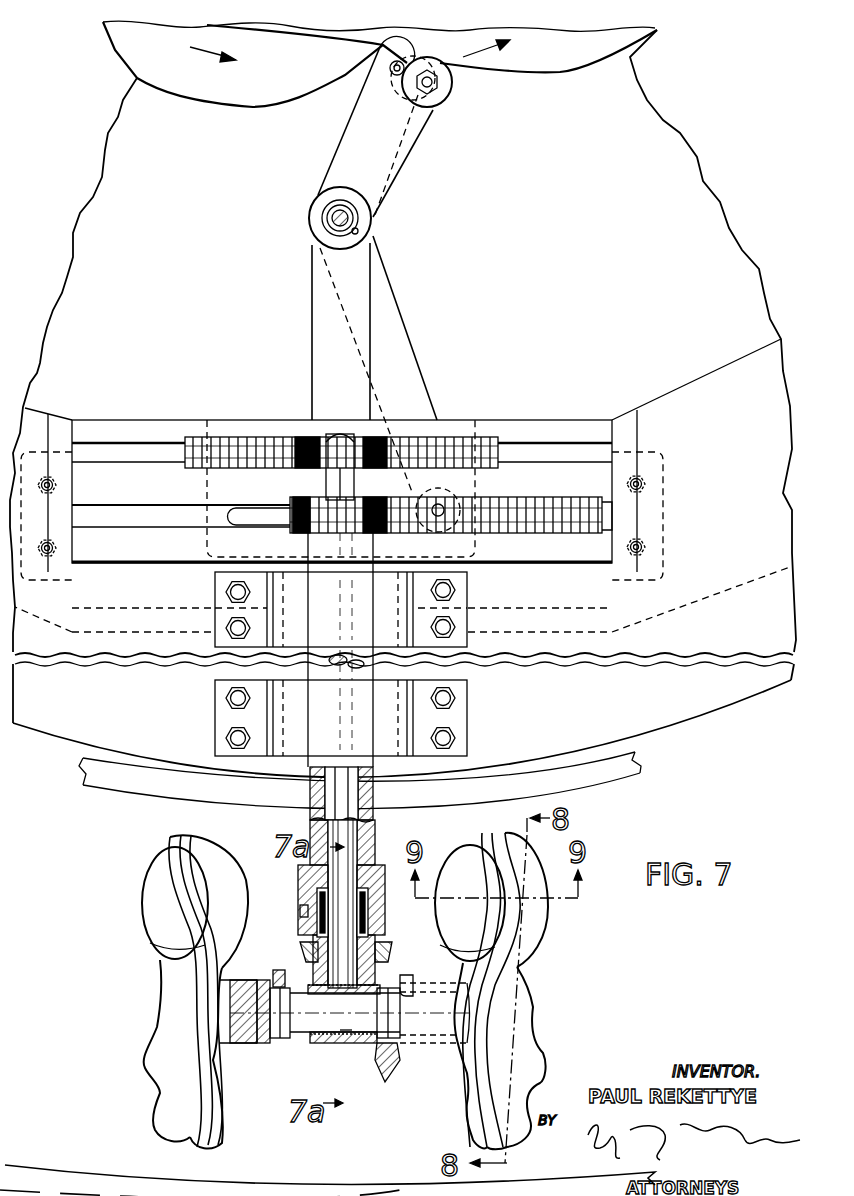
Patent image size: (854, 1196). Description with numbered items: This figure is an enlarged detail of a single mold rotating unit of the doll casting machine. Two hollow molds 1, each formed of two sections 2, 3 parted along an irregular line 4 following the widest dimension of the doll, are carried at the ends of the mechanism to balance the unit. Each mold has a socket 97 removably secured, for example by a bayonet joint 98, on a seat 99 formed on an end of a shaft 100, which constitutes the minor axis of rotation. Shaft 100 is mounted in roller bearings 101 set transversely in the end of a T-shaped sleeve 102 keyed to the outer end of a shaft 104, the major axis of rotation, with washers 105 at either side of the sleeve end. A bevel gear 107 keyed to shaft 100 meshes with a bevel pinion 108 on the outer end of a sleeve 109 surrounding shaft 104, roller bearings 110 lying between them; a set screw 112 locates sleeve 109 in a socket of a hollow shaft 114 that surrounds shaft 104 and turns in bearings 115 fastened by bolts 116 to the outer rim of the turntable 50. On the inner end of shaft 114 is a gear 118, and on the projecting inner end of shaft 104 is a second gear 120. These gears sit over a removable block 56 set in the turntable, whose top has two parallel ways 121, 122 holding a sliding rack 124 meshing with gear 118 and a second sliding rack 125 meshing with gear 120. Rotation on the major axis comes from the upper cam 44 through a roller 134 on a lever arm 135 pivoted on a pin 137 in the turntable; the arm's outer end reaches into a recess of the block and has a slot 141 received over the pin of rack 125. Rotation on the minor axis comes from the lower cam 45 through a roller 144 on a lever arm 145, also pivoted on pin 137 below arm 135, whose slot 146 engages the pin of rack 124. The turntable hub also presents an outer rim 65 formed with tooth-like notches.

The hollow mold 1 is at (168, 835).
The mold section 2 is at (172, 1088).
The mold section 3 is at (215, 1107).
The irregular parting line 4 is at (197, 935).
The upper cam 44 is at (493, 62).
The lower cam 45 is at (253, 95).
The turntable 50 is at (697, 707).
The removable block 56 is at (593, 477).
The outer rim 65 is at (588, 778).
The socket 97 is at (272, 1043).
The bayonet joint 98 is at (283, 987).
The seat 99 is at (275, 1010).
The shaft 100 is at (335, 1017).
The roller bearings 101 is at (337, 1017).
The T-shaped sleeve 102 is at (340, 1042).
The shaft 104 is at (347, 853).
The washers 105 is at (322, 1040).
The bevel gear 107 is at (395, 1078).
The bevel pinion 108 is at (368, 960).
The sleeve 109 is at (316, 902).
The roller bearings 110 is at (369, 910).
The set screw 112 is at (300, 911).
The hollow shaft 114 is at (373, 795).
The bearings 115 is at (463, 583).
The bolts 116 is at (455, 628).
The gear 118 is at (307, 530).
The second gear 120 is at (310, 462).
The way 121 is at (177, 522).
The way 122 is at (173, 458).
The sliding rack 124 is at (553, 507).
The second sliding rack 125 is at (210, 465).
The roller 134 is at (448, 97).
The lever arm 135 is at (398, 163).
The pin 137 is at (333, 218).
The slot 141 is at (330, 423).
The roller 144 is at (386, 74).
The lever arm 145 is at (412, 364).
The slot 146 is at (455, 490).